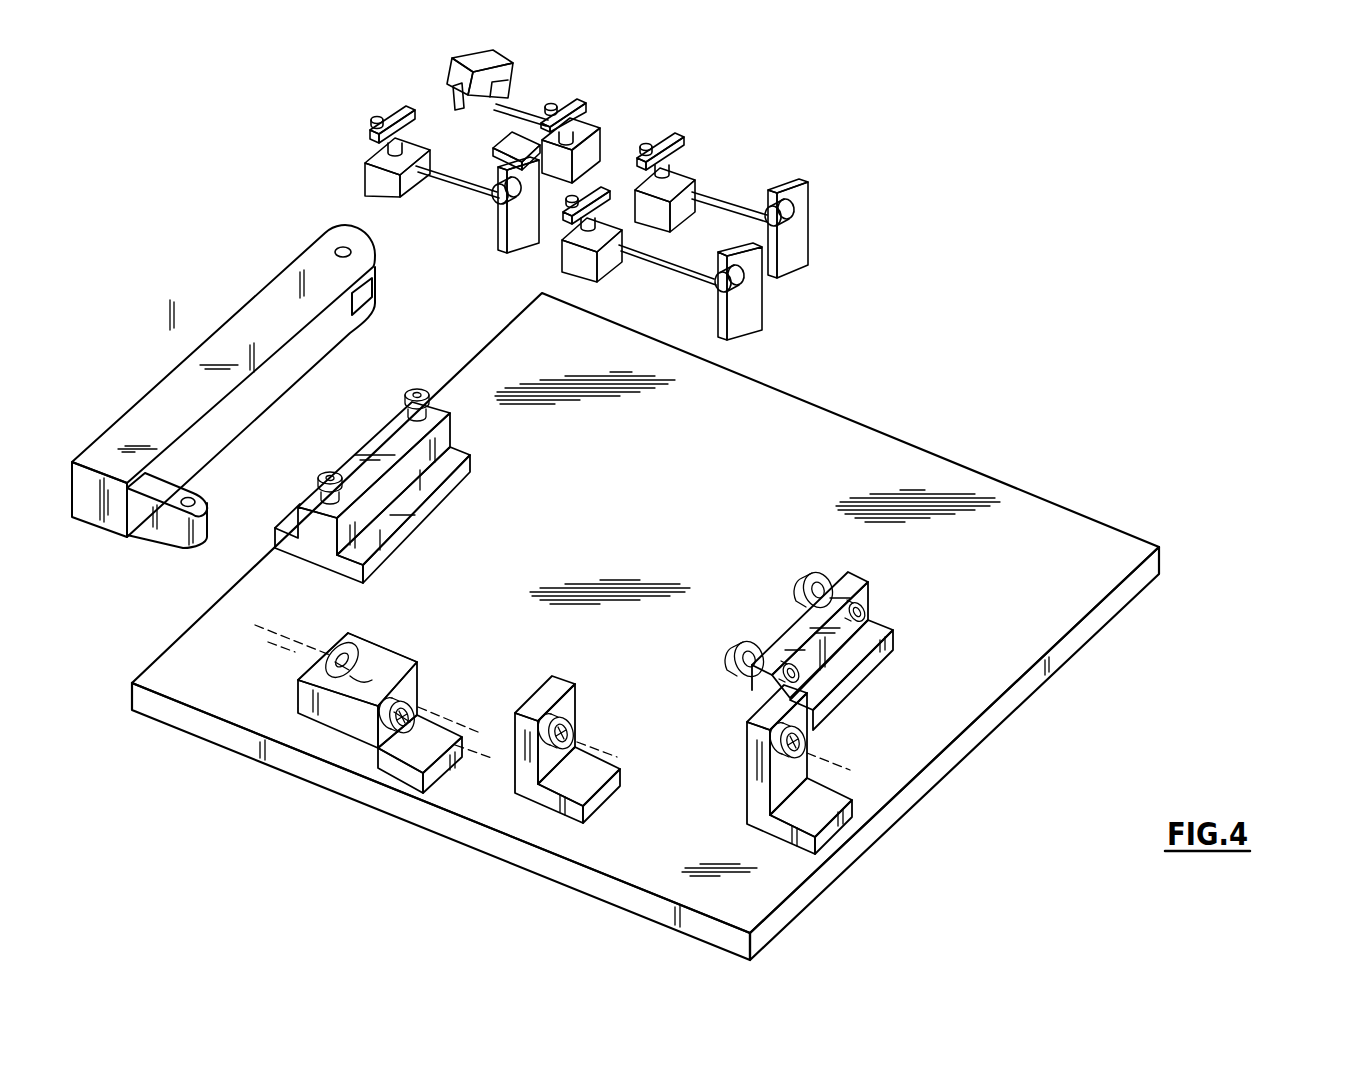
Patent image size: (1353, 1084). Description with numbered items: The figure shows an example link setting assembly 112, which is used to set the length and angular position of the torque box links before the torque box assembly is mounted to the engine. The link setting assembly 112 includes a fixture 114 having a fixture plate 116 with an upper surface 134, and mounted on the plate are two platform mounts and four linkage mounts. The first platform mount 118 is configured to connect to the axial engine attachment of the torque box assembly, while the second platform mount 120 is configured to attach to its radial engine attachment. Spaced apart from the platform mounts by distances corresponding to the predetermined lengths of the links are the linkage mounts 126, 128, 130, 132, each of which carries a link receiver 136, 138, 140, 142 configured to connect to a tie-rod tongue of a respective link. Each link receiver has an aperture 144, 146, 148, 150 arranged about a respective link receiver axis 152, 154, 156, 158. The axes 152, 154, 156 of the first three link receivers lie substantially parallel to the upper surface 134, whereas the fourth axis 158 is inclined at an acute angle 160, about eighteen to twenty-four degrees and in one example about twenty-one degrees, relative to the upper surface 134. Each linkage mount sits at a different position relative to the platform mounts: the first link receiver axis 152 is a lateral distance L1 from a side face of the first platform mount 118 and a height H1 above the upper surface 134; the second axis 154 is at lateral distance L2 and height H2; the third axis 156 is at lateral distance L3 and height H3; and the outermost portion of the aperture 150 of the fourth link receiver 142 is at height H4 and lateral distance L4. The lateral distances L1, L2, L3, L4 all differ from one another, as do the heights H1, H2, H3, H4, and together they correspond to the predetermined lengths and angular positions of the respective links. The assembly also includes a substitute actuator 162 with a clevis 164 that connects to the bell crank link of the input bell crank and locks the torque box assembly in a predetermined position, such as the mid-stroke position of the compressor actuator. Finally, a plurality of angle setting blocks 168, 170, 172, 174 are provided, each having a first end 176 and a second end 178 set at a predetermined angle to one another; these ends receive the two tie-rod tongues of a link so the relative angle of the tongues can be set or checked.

The link setting assembly 112 is at (731, 626).
The fixture 114 is at (645, 626).
The fixture plate 116 is at (1002, 713).
The first platform mount 118 is at (833, 673).
The second platform mount 120 is at (383, 450).
The first linkage mount 126 is at (823, 727).
The second linkage mount 128 is at (594, 746).
The third linkage mount 130 is at (323, 723).
The fourth linkage mount 132 is at (372, 638).
The upper surface 134 is at (970, 733).
The first link receiver 136 is at (790, 724).
The second link receiver 138 is at (570, 703).
The third link receiver 140 is at (418, 683).
The fourth link receiver 142 is at (370, 638).
The aperture 144 is at (812, 745).
The aperture 146 is at (580, 733).
The aperture 148 is at (405, 737).
The aperture 150 is at (342, 683).
The first link receiver axis 152 is at (838, 765).
The second link receiver axis 154 is at (603, 758).
The third link receiver axis 156 is at (467, 753).
The fourth link receiver axis 158 is at (258, 640).
The acute angle 160 is at (291, 652).
The substitute actuator 162 is at (223, 365).
The clevis 164 is at (335, 242).
The angle setting block 168 is at (762, 201).
The angle setting block 170 is at (772, 296).
The angle setting block 172 is at (394, 194).
The angle setting block 174 is at (515, 49).
The first end 176 is at (802, 212).
The second end 178 is at (677, 170).
The lateral distance L1 is at (898, 775).
The lateral distance L2 is at (527, 648).
The lateral distance L3 is at (444, 743).
The lateral distance L4 is at (390, 670).
The height H1 is at (745, 823).
The height H2 is at (489, 709).
The height H3 is at (328, 692).
The height H4 is at (284, 661).